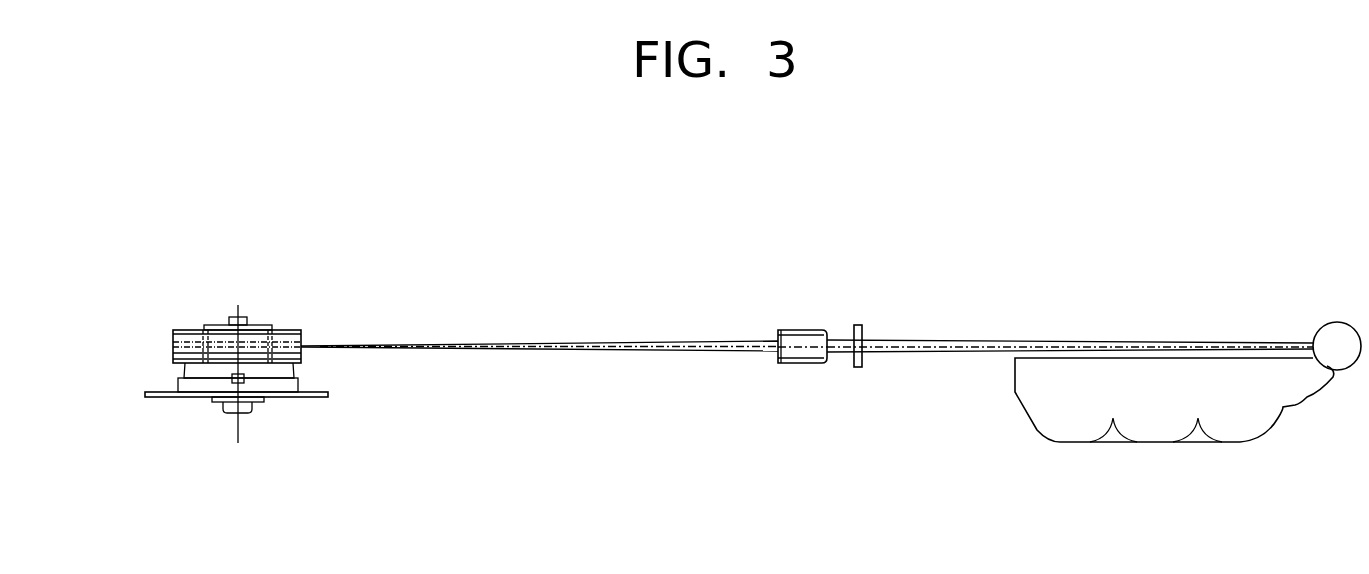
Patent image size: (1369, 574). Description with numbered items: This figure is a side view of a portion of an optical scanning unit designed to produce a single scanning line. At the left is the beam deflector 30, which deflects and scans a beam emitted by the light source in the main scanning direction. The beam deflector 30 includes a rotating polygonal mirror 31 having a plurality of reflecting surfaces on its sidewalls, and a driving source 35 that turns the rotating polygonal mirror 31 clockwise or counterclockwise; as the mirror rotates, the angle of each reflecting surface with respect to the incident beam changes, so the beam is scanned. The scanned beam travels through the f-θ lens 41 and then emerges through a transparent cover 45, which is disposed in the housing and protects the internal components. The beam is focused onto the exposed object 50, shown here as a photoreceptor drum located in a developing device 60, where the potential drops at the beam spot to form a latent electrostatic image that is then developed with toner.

The beam deflector 30 is at (200, 375).
The rotating polygonal mirror 31 is at (173, 333).
The driving source 35 is at (193, 375).
The f-θ lens 41 is at (803, 330).
The cover 45 is at (857, 325).
The exposed object 50 is at (1337, 322).
The developing device 60 is at (1292, 420).